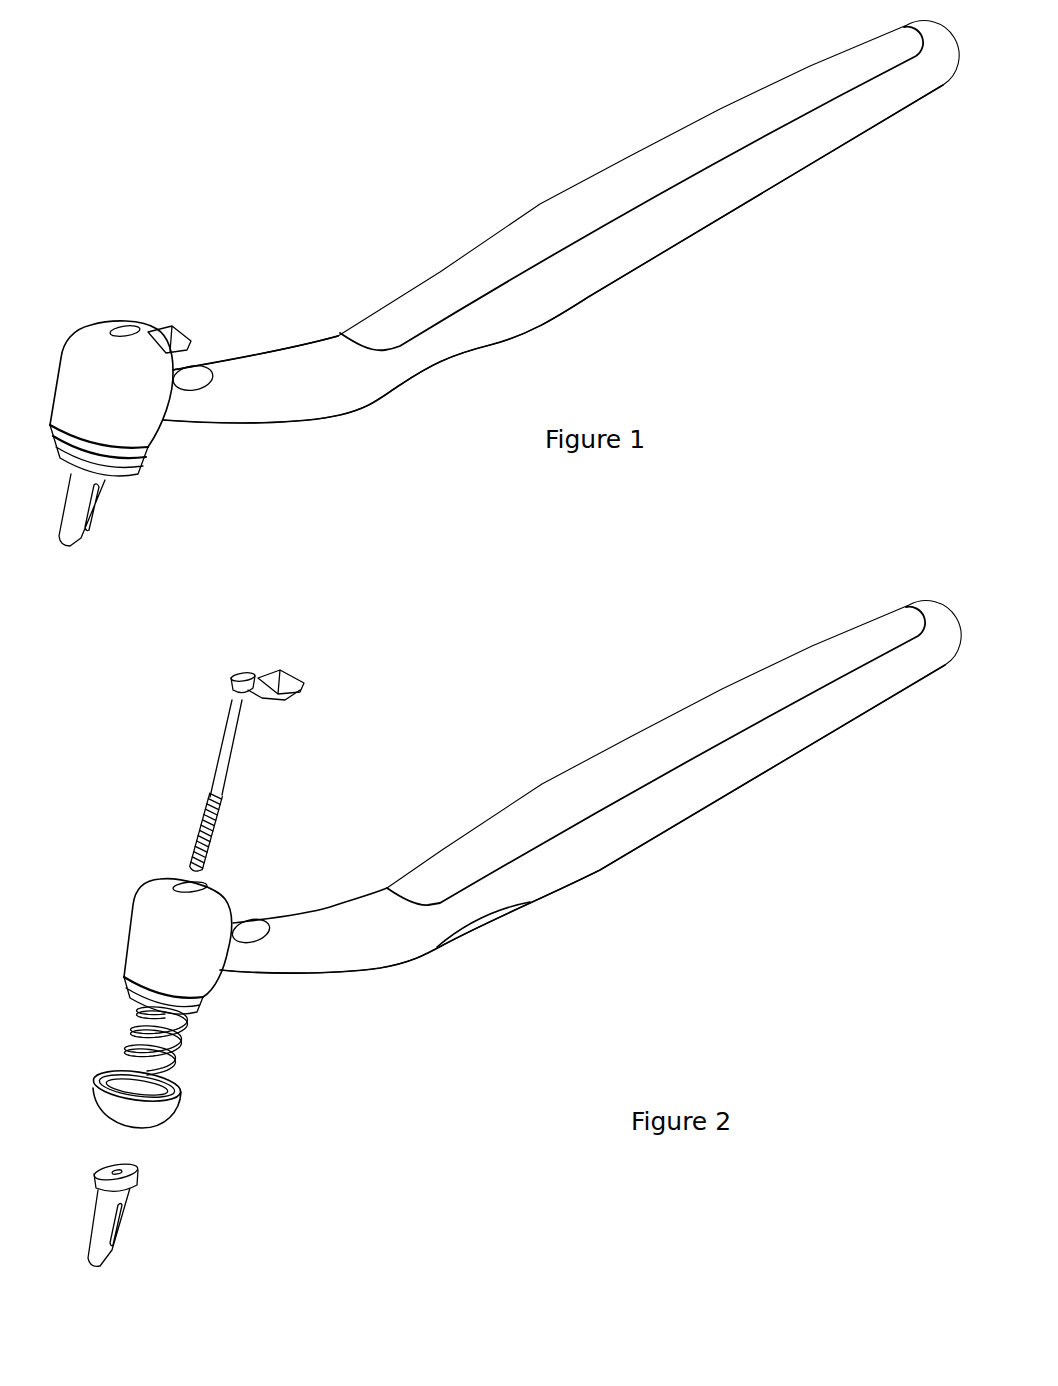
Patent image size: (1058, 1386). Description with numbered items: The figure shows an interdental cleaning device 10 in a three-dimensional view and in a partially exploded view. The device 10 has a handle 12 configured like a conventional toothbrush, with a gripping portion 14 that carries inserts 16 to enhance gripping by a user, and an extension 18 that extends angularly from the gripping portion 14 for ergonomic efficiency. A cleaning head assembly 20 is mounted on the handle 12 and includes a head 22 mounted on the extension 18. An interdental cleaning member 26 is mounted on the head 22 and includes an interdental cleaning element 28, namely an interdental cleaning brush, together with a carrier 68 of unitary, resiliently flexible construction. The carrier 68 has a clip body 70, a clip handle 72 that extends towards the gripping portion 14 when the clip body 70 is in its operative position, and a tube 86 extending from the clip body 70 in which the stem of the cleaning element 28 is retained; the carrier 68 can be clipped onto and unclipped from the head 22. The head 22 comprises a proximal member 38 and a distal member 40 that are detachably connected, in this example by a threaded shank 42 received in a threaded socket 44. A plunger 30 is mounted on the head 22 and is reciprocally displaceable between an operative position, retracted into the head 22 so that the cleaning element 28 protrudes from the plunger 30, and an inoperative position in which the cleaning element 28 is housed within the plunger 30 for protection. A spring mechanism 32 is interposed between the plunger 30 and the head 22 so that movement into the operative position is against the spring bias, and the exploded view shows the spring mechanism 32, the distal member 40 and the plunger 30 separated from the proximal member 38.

In FIG. 1, the interdental cleaning device 10 is at (331, 137).
In FIG. 2, the interdental cleaning device 10 is at (830, 562).
In FIG. 1, the handle 12 is at (607, 135).
In FIG. 2, the handle 12 is at (681, 657).
In FIG. 1, the gripping portion 14 is at (733, 210).
In FIG. 2, the gripping portion 14 is at (800, 743).
In FIG. 1, the inserts 16 is at (533, 223).
In FIG. 2, the inserts 16 is at (632, 765).
In FIG. 1, the extension 18 is at (250, 358).
In FIG. 1, the cleaning head assembly 20 is at (105, 266).
In FIG. 2, the cleaning head assembly 20 is at (358, 636).
In FIG. 1, the head 22 is at (137, 433).
In FIG. 2, the interdental cleaning member 26 is at (183, 697).
In FIG. 2, the interdental cleaning element 28 is at (205, 815).
In FIG. 1, the plunger 30 is at (81, 541).
In FIG. 2, the plunger 30 is at (120, 1202).
In FIG. 2, the spring mechanism 32 is at (232, 1040).
In FIG. 1, the proximal member 38 is at (72, 350).
In FIG. 2, the proximal member 38 is at (142, 903).
In FIG. 1, the distal member 40 is at (133, 477).
In FIG. 2, the distal member 40 is at (168, 1115).
In FIG. 2, the threaded shank 42 is at (128, 983).
In FIG. 2, the threaded socket 44 is at (103, 1078).
In FIG. 2, the carrier 68 is at (283, 700).
In FIG. 2, the clip body 70 is at (248, 700).
In FIG. 1, the clip handle 72 is at (170, 328).
In FIG. 2, the clip handle 72 is at (303, 690).
In FIG. 2, the tube 86 is at (225, 758).